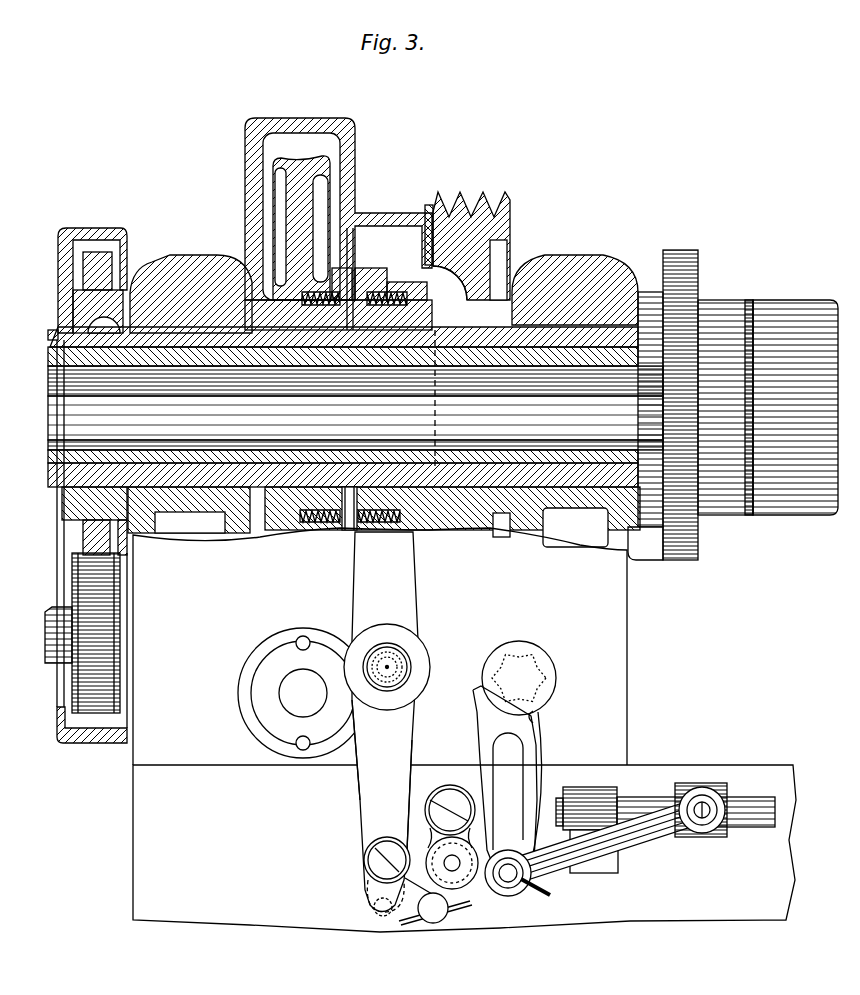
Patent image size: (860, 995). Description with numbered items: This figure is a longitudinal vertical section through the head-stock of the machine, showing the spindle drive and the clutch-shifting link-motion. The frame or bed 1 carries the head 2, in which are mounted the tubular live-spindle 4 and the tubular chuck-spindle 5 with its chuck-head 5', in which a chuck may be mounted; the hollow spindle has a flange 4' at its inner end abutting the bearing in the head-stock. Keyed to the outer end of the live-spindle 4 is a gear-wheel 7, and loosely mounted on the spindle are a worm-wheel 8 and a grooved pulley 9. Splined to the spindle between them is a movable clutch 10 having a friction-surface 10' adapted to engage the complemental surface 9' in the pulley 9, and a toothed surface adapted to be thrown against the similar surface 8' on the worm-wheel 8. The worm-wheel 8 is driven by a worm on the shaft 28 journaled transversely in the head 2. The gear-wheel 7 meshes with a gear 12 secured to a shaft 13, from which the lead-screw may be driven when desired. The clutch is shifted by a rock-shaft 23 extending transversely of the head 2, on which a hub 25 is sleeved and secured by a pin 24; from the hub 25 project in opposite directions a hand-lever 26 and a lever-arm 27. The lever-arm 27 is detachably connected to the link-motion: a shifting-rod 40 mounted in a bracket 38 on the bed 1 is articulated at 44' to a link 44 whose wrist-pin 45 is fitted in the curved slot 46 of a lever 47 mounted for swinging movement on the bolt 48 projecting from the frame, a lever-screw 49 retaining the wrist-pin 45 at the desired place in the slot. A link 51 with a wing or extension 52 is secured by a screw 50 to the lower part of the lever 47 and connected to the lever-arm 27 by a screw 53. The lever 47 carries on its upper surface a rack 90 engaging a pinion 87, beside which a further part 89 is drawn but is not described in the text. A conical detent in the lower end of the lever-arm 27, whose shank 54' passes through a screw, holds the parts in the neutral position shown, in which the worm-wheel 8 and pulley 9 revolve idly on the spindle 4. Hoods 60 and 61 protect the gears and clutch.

The frame or bed 1 is at (464, 848).
The head 2 is at (380, 646).
The live-spindle 4 is at (343, 371).
The flange 4' is at (667, 393).
The chuck-spindle 5 is at (355, 408).
The chuck-head 5' is at (795, 407).
The gear-wheel 7 is at (112, 255).
The worm-wheel 8 is at (273, 228).
The toothed surface 8' is at (332, 279).
The grooved pulley 9 is at (471, 231).
The complemental surface 9' is at (416, 226).
The movable clutch 10 is at (423, 368).
The friction-surface 10' is at (393, 268).
The gear 12 is at (115, 628).
The shaft 13 is at (52, 667).
The rock-shaft 23 is at (408, 655).
The pin 24 is at (385, 640).
The hub 25 is at (418, 675).
The hand-lever 26 is at (385, 722).
The lever-arm 27 is at (392, 797).
The shaft 28 is at (303, 693).
The bracket 38 is at (584, 787).
The shifting-rod 40 is at (650, 793).
The link 44 is at (605, 841).
The articulation 44' is at (710, 786).
The wrist-pin 45 is at (527, 897).
The curved slot 46 is at (507, 803).
The lever 47 is at (537, 763).
The bolt 48 is at (448, 800).
The lever-screw 49 is at (552, 895).
The screw 50 is at (437, 922).
The link 51 is at (413, 923).
The wing or extension 52 is at (410, 908).
The screw 53 is at (366, 866).
The shank 54' is at (343, 898).
The hood 60 is at (87, 268).
The hood 61 is at (253, 163).
The pinion 87 is at (530, 657).
The ring 89 is at (557, 675).
The rack 90 is at (536, 716).